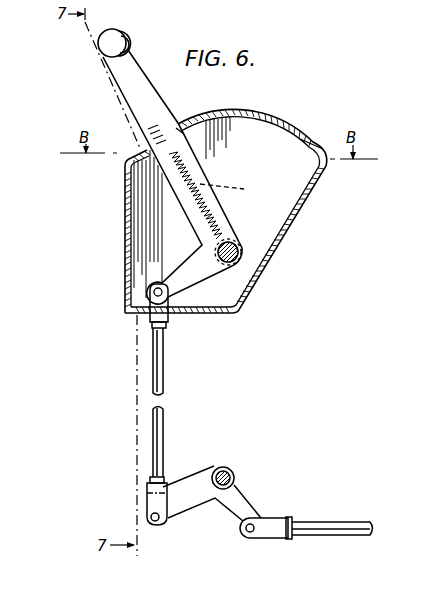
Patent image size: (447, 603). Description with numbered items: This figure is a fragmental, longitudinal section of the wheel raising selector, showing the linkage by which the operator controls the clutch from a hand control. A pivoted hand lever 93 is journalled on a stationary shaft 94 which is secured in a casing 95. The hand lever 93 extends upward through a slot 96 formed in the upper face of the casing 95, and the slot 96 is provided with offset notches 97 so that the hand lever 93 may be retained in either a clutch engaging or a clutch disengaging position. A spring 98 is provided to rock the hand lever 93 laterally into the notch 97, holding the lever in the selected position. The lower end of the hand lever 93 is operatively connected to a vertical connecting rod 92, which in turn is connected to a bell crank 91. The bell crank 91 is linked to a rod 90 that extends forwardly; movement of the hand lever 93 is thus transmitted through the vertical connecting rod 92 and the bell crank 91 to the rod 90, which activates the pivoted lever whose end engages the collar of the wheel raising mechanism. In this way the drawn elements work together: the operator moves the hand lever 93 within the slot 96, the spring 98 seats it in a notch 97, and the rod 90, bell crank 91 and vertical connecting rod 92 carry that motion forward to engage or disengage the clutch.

The rod 90 is at (356, 525).
The bell crank 91 is at (240, 487).
The vertical connecting rod 92 is at (163, 392).
The hand lever 93 is at (203, 170).
The stationary shaft 94 is at (238, 254).
The casing 95 is at (307, 205).
The slot 96 is at (250, 112).
The offset notches 97 is at (302, 135).
The spring 98 is at (234, 188).